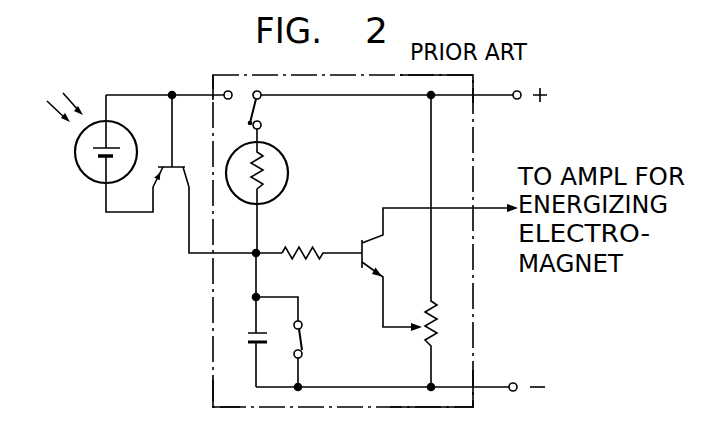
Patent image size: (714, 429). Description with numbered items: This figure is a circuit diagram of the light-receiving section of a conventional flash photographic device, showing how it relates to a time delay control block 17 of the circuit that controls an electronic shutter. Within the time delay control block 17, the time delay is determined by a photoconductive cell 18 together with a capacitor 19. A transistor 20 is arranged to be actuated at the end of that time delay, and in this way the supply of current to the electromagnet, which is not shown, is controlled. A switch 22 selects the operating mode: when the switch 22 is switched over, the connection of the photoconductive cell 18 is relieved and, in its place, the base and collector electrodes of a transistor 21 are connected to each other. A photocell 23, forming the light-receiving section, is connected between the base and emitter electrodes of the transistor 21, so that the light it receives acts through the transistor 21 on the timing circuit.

The time delay control block 17 is at (474, 127).
The photoconductive cell 18 is at (288, 170).
The capacitor 19 is at (248, 333).
The transistor 20 is at (366, 268).
The transistor 21 is at (186, 167).
The switch 22 is at (259, 103).
The photocell 23 is at (82, 173).